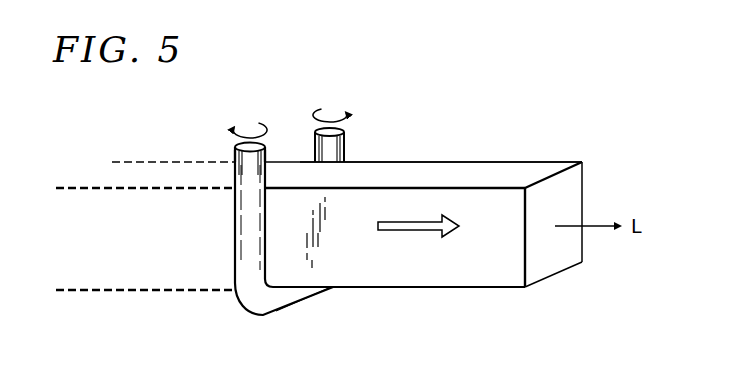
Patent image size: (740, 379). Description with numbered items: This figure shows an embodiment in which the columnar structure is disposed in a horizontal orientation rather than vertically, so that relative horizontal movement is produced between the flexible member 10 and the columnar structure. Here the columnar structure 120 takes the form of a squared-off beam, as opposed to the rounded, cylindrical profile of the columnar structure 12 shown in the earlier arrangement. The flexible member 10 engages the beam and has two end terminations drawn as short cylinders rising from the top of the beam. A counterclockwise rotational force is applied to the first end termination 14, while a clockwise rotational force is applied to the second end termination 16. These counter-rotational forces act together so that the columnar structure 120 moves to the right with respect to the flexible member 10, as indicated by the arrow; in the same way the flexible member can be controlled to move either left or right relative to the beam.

The flexible member 10 is at (246, 300).
The columnar structure 12 is at (448, 277).
The first end termination 14 is at (350, 130).
The second end termination 16 is at (237, 147).
The columnar structure 120 is at (522, 170).